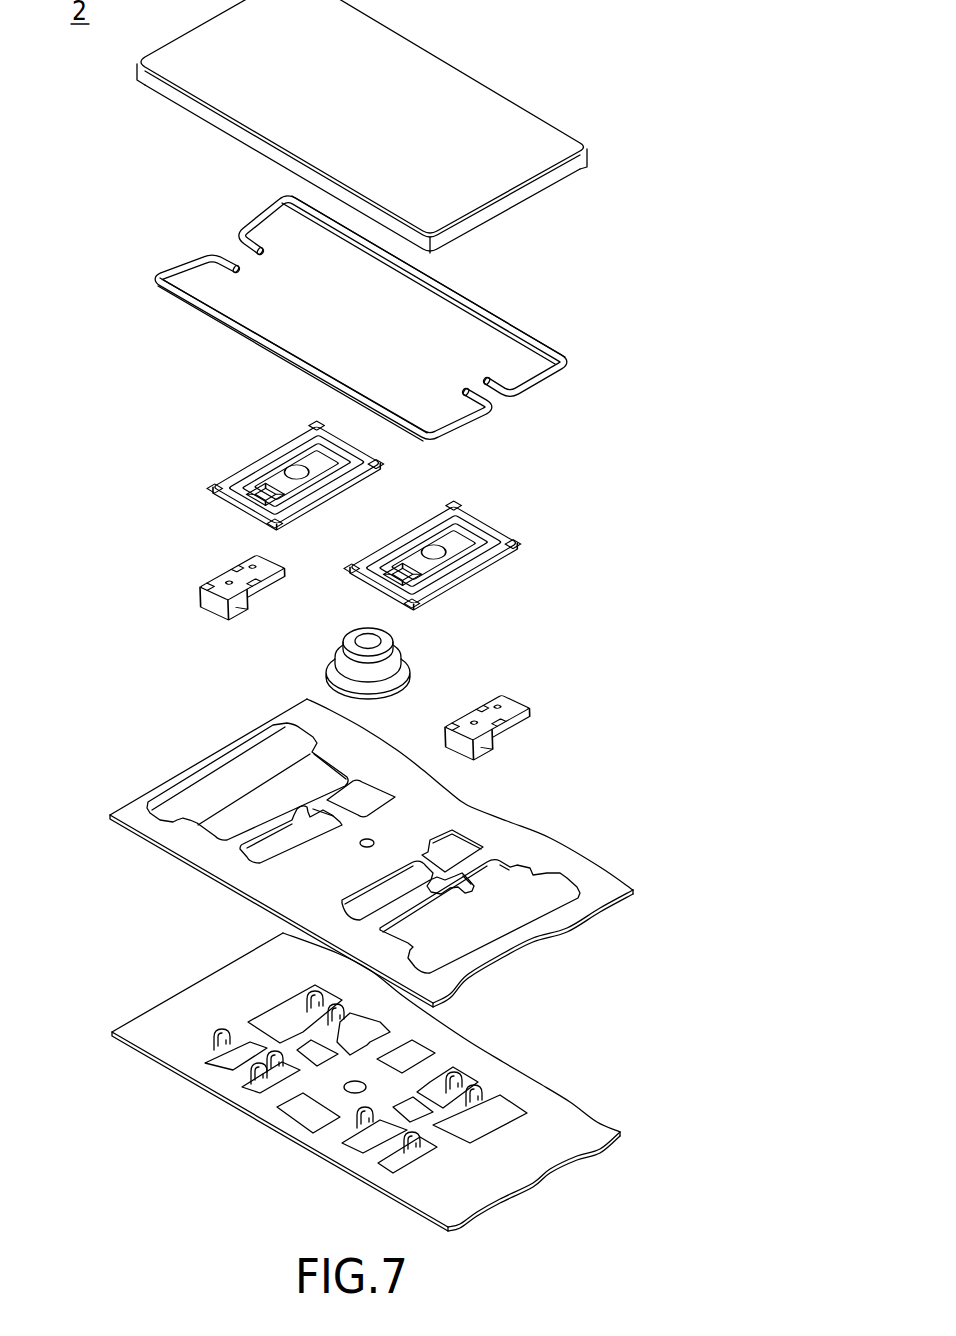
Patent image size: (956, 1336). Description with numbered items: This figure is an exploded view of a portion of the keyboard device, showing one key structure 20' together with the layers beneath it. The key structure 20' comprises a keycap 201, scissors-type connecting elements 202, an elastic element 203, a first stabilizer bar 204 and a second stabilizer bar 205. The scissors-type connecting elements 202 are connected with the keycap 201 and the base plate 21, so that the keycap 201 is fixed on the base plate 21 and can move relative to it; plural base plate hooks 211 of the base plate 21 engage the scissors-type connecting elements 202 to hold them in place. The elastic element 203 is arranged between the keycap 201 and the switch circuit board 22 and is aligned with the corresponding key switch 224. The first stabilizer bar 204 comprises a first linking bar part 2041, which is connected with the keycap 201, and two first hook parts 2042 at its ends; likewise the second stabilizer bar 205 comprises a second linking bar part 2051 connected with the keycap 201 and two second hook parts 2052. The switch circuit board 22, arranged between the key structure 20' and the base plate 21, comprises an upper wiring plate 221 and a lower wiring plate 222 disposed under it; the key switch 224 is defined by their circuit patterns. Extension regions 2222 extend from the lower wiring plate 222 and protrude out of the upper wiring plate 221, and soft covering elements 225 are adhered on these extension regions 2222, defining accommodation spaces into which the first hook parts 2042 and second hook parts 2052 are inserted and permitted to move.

The key structure 20' is at (361, 615).
The keycap 201 is at (424, 62).
The scissors-type connecting element 202 is at (253, 447).
The elastic element 203 is at (369, 620).
The first stabilizer bar 204 is at (332, 338).
The first linking bar part 2041 is at (258, 345).
The first hook parts 2042 is at (230, 256).
The second stabilizer bar 205 is at (423, 294).
The second linking bar part 2051 is at (445, 290).
The second hook parts 2052 is at (251, 241).
The switch circuit board 22 is at (361, 855).
The upper wiring plate 221 is at (464, 800).
The lower wiring plate 222 is at (510, 875).
The extension regions 2222 is at (190, 797).
The key switch 224 is at (367, 838).
The soft covering elements 225 is at (218, 578).
The base plate 21 is at (366, 1082).
The base plate hooks 211 is at (226, 1040).